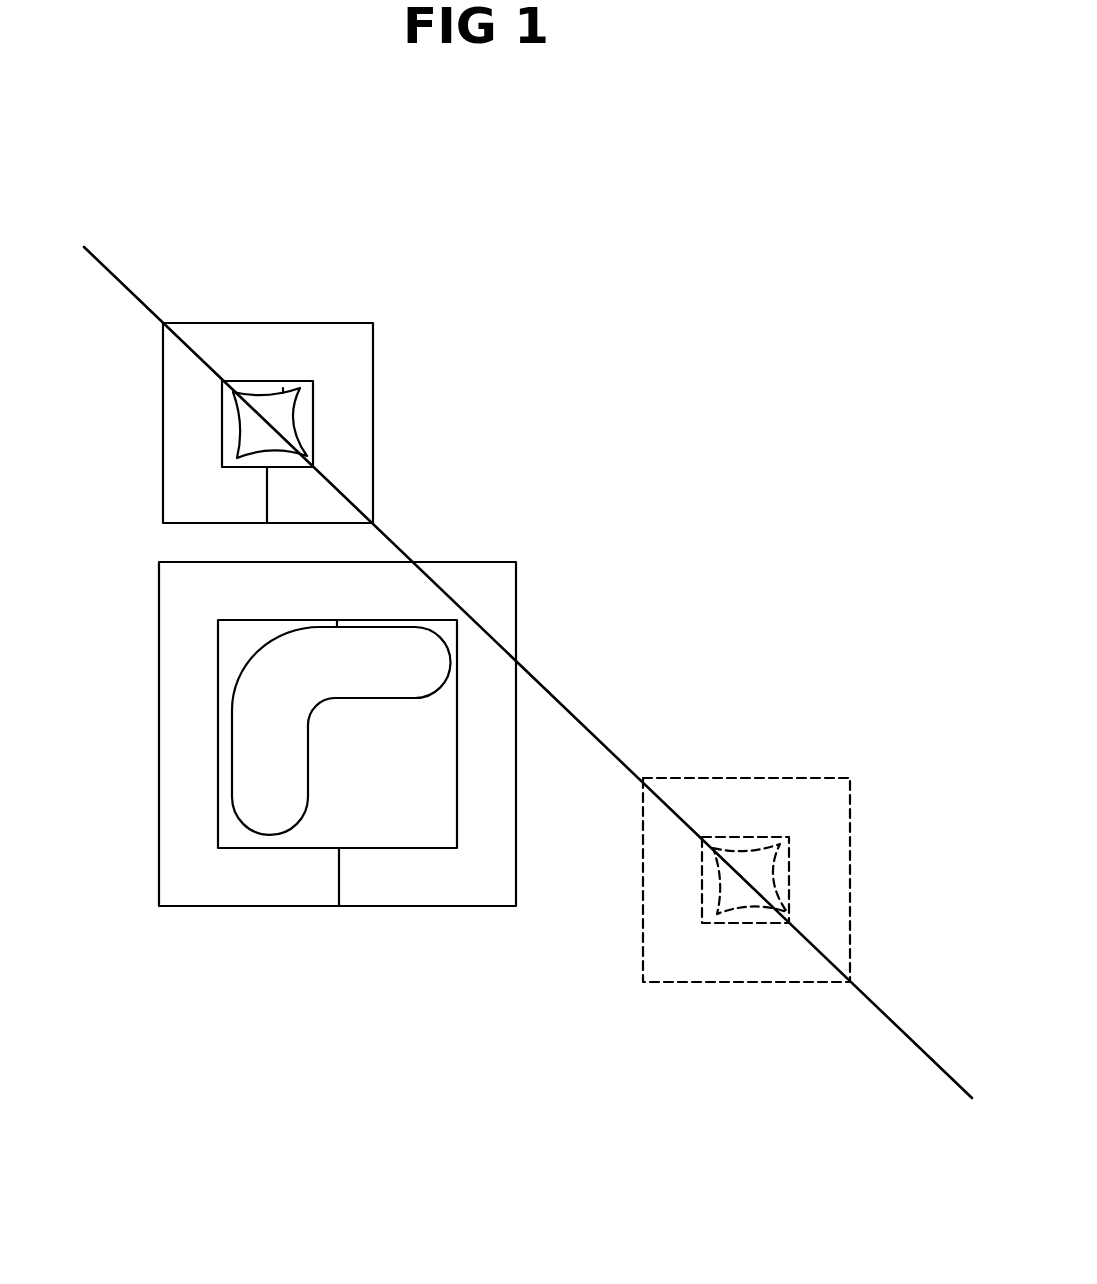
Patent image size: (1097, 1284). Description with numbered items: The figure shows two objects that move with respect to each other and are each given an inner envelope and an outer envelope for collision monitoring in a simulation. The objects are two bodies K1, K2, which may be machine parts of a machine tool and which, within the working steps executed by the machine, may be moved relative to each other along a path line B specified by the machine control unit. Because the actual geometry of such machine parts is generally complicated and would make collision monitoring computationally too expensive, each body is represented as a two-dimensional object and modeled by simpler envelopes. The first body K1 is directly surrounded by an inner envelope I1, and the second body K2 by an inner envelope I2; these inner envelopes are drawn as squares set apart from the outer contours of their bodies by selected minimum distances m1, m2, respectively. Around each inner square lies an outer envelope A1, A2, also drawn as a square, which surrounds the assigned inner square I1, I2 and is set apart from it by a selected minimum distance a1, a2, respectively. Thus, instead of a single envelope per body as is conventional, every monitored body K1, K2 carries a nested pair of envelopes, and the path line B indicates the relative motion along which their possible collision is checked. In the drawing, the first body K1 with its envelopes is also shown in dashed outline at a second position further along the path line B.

The path line B is at (893, 1023).
The outer envelope A1 is at (374, 437).
The outer envelope A2 is at (159, 707).
The inner envelope I1 is at (313, 402).
The inner envelope I2 is at (459, 810).
The body K1 is at (263, 403).
The body K2 is at (232, 783).
The minimum distance m1 is at (283, 391).
The minimum distance m2 is at (330, 618).
The minimum distance a1 is at (267, 503).
The minimum distance a2 is at (339, 878).